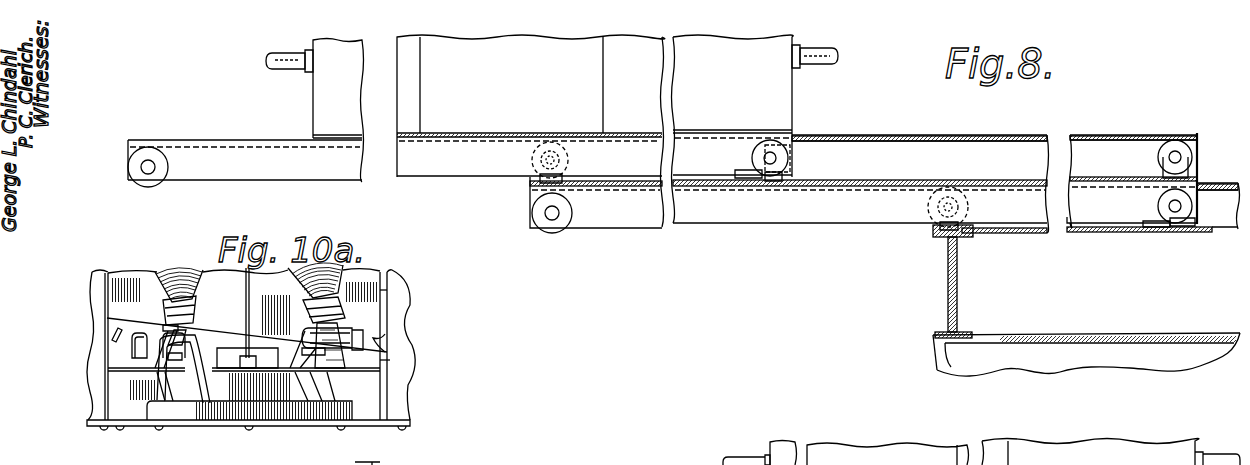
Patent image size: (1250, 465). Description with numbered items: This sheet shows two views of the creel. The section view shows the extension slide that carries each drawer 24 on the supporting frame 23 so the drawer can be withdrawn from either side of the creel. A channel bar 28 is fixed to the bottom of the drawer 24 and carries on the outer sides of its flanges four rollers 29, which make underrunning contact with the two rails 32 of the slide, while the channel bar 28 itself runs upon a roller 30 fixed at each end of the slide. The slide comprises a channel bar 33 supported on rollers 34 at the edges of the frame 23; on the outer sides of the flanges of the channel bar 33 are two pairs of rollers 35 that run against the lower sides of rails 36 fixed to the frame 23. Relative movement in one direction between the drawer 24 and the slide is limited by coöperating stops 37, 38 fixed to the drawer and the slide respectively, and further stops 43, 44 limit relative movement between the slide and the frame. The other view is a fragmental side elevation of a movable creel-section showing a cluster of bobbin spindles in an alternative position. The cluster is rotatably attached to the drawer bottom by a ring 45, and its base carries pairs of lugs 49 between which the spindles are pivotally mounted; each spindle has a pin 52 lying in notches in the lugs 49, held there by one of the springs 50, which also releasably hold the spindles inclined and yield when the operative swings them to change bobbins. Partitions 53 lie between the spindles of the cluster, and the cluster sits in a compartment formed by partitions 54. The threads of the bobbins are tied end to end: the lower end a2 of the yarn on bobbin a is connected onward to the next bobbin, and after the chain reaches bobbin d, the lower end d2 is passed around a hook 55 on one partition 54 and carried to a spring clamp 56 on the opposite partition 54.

In FIG. 8, the supporting frame 23 is at (1065, 354).
In FIG. 8, the drawer 24 is at (553, 108).
In FIG. 8, the channel bar 28 is at (448, 177).
In FIG. 8, the rollers 29 is at (152, 188).
In FIG. 8, the roller 30 is at (527, 163).
In FIG. 8, the rails 32 is at (872, 134).
In FIG. 8, the channel bar 33 is at (680, 225).
In FIG. 8, the rollers 34 is at (930, 215).
In FIG. 8, the rollers 35 is at (553, 234).
In FIG. 8, the rails 36 is at (1222, 184).
In FIG. 8, the stop 37 is at (776, 182).
In FIG. 8, the stop 38 is at (750, 179).
In FIG. 8, the stop 43 is at (1183, 228).
In FIG. 8, the stop 44 is at (1160, 228).
In FIG. 10A, the ring 45 is at (218, 411).
In FIG. 10A, the lugs 49 is at (182, 343).
In FIG. 10A, the springs 50 is at (185, 341).
In FIG. 10A, the pin 52 is at (387, 360).
In FIG. 10A, the partitions 53 is at (246, 288).
In FIG. 10A, the partitions 54 is at (108, 372).
In FIG. 10A, the hook 55 is at (437, 280).
In FIG. 10A, the spring clamp 56 is at (387, 352).
In FIG. 10A, the bobbin a is at (175, 297).
In FIG. 10A, the lower end of yarn on bobbin a a2 is at (157, 279).
In FIG. 10A, the bobbin d is at (341, 272).
In FIG. 10A, the lower end of yarn on bobbin d d2 is at (291, 275).